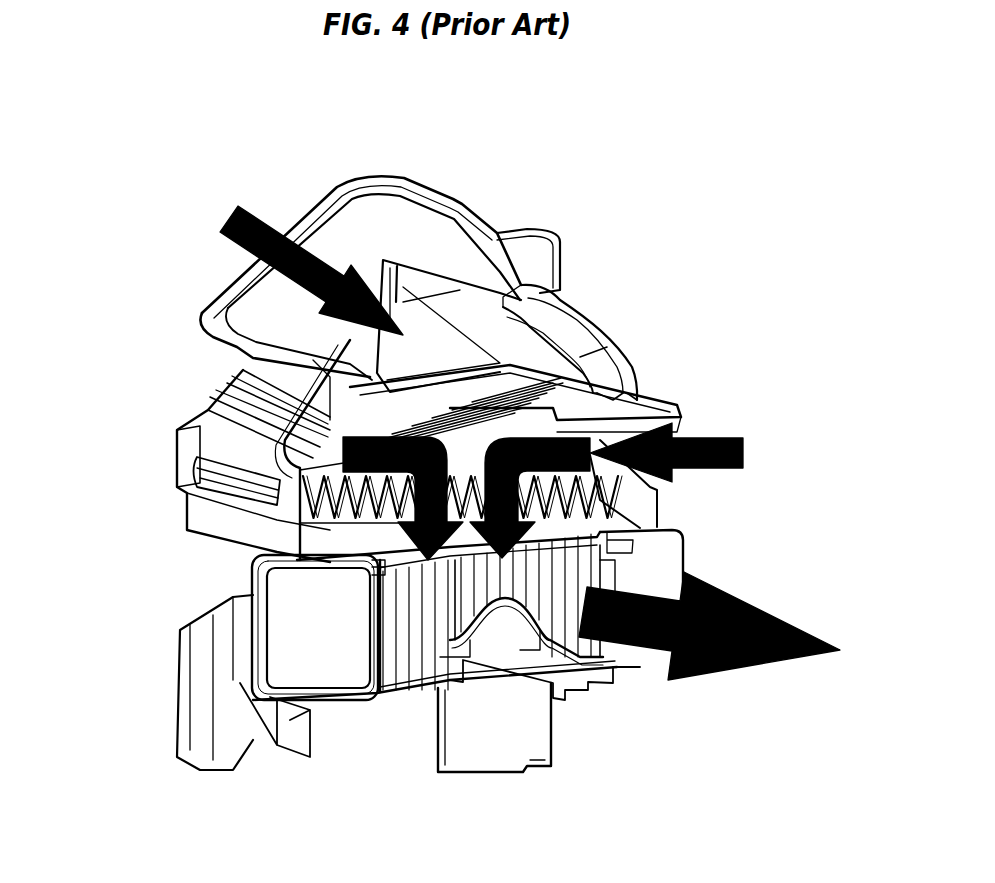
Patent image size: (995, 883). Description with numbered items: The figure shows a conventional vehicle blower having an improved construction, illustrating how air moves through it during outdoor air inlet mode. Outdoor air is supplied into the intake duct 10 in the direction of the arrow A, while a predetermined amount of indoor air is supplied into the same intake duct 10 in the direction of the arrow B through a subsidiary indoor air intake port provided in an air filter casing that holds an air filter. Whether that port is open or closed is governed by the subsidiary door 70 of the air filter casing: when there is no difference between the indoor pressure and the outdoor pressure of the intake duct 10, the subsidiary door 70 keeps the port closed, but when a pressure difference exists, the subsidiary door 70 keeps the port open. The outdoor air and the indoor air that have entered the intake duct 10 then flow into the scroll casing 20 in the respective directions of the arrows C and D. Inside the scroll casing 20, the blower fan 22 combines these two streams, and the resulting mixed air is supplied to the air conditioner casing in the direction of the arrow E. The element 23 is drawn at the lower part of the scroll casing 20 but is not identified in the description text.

The intake duct 10 is at (237, 402).
The scroll casing 20 is at (255, 605).
The blower fan 22 is at (387, 630).
The lower housing block 23 is at (460, 733).
The subsidiary door 70 is at (595, 408).
The arrow A is at (250, 216).
The arrow B is at (723, 437).
The arrow C is at (500, 487).
The arrow D is at (500, 497).
The arrow E is at (758, 665).